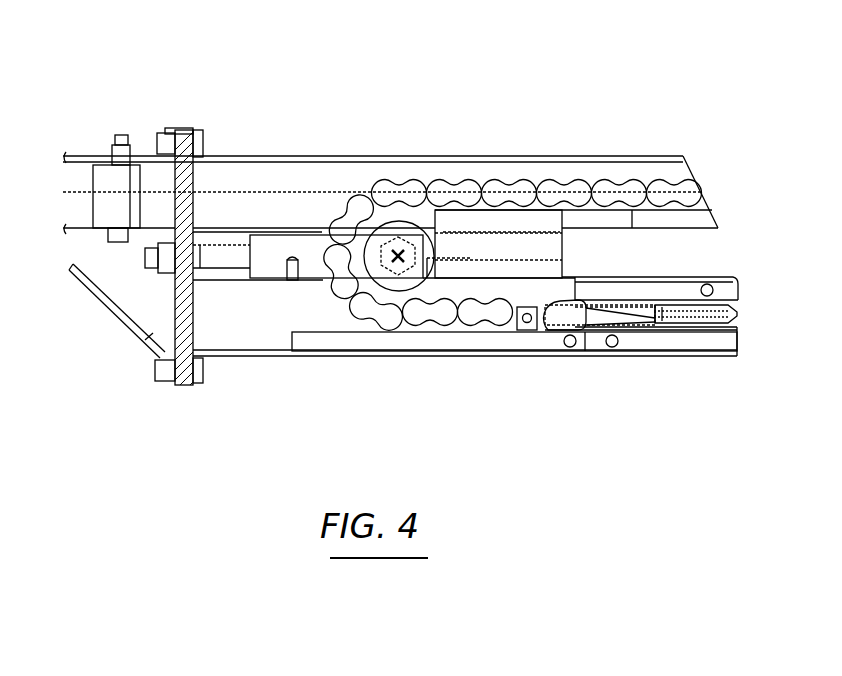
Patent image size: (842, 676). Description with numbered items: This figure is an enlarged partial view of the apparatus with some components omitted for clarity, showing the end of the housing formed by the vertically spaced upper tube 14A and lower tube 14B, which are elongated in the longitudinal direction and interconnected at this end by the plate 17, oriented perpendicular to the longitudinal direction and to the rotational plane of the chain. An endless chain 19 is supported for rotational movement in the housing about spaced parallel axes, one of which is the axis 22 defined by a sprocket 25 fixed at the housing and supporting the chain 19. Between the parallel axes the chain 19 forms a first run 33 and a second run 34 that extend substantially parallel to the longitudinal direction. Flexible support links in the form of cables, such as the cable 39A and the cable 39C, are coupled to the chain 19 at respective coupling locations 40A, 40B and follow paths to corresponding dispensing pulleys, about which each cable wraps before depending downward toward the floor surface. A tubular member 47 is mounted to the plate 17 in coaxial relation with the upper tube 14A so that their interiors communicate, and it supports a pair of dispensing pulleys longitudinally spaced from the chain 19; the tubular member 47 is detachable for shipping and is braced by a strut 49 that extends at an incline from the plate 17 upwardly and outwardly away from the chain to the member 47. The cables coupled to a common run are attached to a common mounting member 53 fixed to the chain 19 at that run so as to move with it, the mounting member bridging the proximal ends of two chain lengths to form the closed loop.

The upper tube 14A is at (263, 155).
The lower tube 14B is at (643, 277).
The plate 17 is at (183, 128).
The chain 19 is at (345, 317).
The parallel axis 22 is at (406, 253).
The sprocket 25 is at (420, 297).
The first run 33 is at (576, 177).
The second run 34 is at (458, 327).
The flexible support link 39A is at (686, 322).
The flexible support link 39C is at (505, 190).
The coupling location 40A is at (556, 334).
The coupling location 40B is at (600, 374).
The tubular member 47 is at (87, 157).
The strut 49 is at (110, 320).
The mounting member 53 is at (667, 327).